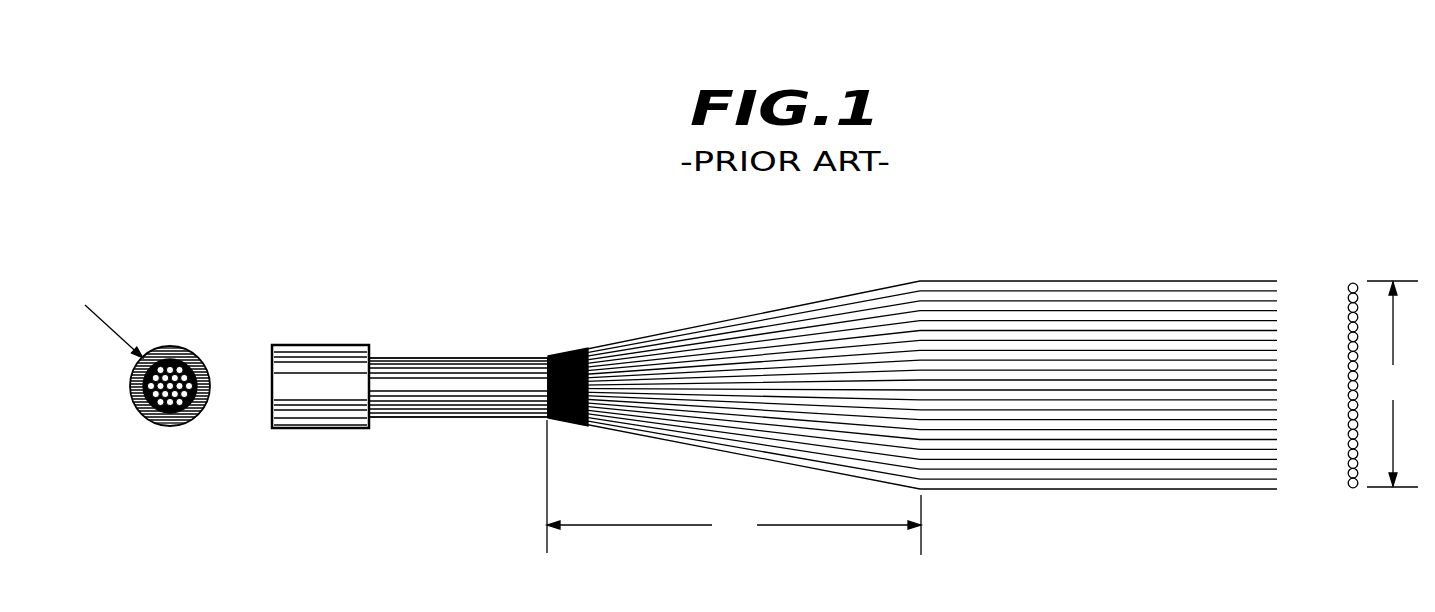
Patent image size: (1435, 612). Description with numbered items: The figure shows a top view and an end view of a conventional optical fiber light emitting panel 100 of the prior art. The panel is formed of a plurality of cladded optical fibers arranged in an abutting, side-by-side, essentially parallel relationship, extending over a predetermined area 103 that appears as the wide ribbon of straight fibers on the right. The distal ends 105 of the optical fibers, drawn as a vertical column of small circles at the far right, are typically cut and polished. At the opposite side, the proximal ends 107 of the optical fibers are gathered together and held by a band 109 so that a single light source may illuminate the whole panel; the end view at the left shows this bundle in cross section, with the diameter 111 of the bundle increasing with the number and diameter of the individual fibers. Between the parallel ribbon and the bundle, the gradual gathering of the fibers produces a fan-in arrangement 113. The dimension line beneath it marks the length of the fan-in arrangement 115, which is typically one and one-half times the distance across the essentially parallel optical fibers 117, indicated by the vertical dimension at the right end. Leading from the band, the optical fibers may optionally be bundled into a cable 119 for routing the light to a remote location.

The optical fiber light emitting panel 100 is at (1016, 180).
The predetermined area 103 is at (1093, 303).
The distal ends 105 is at (1350, 280).
The proximal ends 107 is at (160, 360).
The band 109 is at (314, 345).
The diameter of the bundle 111 is at (200, 417).
The fan-in arrangement 113 is at (716, 340).
The length of the fan-in arrangement 115 is at (734, 487).
The distance across the essentially parallel optical fibers 117 is at (1392, 384).
The cable 119 is at (447, 358).